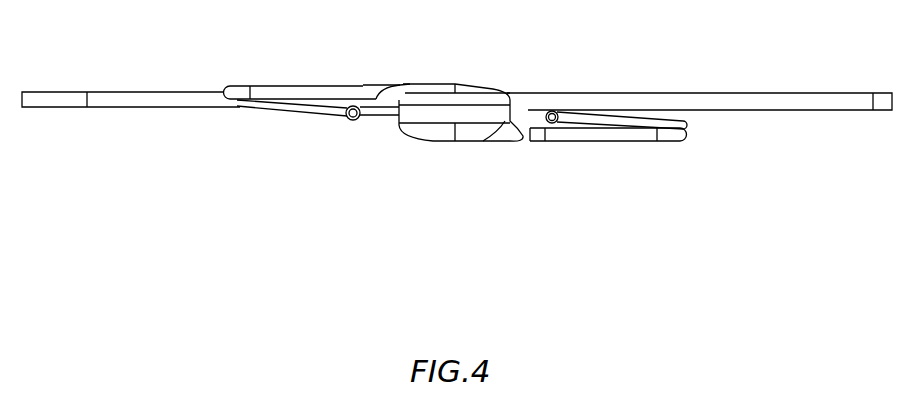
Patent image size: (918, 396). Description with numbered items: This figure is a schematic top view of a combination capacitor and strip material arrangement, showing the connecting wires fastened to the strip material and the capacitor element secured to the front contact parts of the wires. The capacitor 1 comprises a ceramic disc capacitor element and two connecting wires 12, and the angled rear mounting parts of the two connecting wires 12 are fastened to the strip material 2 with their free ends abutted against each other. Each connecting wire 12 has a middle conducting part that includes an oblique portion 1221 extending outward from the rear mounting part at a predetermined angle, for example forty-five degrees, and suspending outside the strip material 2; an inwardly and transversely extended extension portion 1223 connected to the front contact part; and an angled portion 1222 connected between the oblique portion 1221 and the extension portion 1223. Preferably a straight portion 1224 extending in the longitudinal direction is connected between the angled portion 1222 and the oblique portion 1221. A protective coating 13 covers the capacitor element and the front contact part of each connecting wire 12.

The capacitor 1 is at (488, 87).
The strip material 2 is at (163, 97).
The connecting wire 12 is at (309, 80).
The protective coating 13 is at (445, 92).
The oblique portion 1221 is at (608, 124).
The angled portion 1222 is at (672, 143).
The extension portion 1223 is at (592, 143).
The straight portion 1224 is at (687, 125).